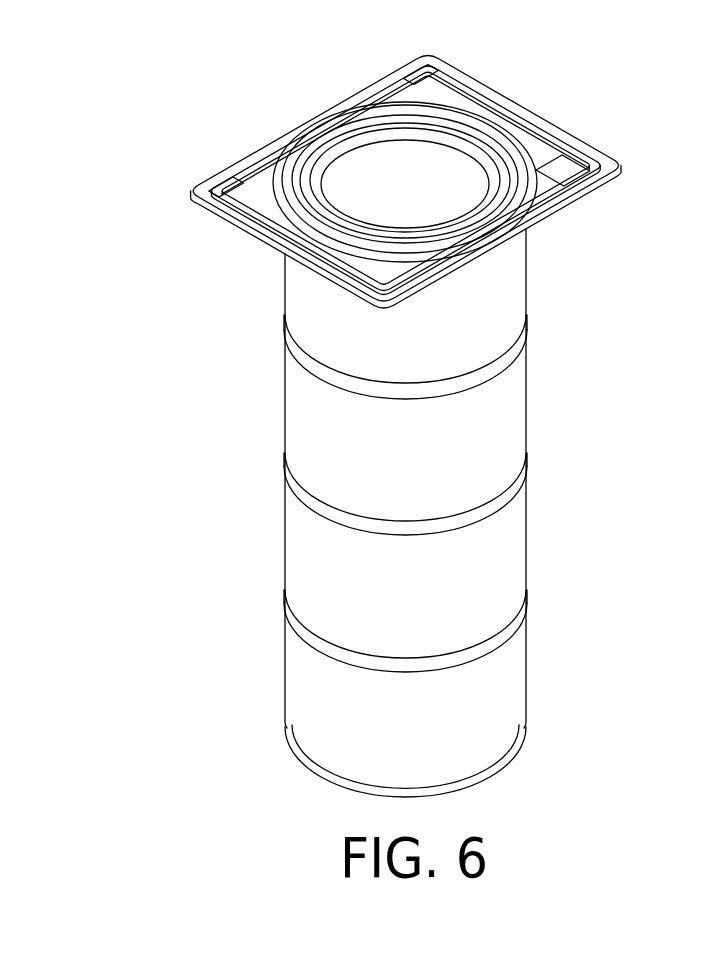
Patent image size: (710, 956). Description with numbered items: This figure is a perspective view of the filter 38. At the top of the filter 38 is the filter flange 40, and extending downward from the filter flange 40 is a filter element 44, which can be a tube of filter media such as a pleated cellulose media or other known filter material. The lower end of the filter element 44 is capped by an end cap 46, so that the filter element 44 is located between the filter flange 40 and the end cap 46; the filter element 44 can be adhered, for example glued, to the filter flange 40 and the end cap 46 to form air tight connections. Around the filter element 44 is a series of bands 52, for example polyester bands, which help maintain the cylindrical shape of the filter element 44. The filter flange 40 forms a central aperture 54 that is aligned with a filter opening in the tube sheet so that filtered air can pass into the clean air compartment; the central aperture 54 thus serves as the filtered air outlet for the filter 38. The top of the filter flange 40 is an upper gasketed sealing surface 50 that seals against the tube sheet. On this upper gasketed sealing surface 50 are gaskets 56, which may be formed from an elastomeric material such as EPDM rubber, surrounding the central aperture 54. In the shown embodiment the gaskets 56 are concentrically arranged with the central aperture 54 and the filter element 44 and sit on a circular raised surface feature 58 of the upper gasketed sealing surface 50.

The filter 38 is at (207, 120).
The filter flange 40 is at (612, 186).
The filter element 44 is at (527, 543).
The end cap 46 is at (510, 757).
The upper gasketed sealing surface 50 is at (389, 90).
The bands 52 is at (372, 535).
The central aperture 54 is at (446, 174).
The gaskets 56 is at (305, 133).
The circular raised surface feature 58 is at (535, 208).